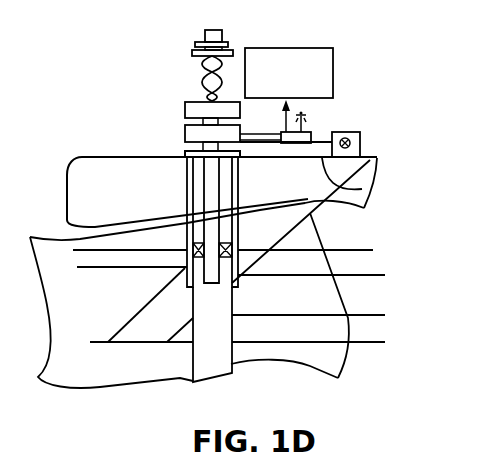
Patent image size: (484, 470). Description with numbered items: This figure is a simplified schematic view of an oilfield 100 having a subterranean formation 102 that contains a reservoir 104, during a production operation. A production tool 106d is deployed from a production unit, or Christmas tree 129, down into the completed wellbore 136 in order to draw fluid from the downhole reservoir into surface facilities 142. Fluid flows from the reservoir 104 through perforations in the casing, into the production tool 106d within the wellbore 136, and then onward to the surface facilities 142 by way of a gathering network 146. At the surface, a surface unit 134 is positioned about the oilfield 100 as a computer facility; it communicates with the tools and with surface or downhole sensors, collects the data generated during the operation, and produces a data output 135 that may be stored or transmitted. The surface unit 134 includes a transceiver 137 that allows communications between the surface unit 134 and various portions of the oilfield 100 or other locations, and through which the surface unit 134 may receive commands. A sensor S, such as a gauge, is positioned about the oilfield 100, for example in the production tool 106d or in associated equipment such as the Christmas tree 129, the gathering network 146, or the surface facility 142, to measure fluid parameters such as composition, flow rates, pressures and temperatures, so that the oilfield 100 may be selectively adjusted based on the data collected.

The oilfield 100 is at (161, 106).
The subterranean formation 102 is at (283, 222).
The reservoir 104 is at (317, 303).
The production tool 106d is at (185, 268).
The Christmas tree 129 is at (223, 35).
The surface unit 134 is at (283, 121).
The data output 135 is at (333, 75).
The wellbore 136 is at (214, 194).
The transceiver 137 is at (306, 120).
The surface facilities 142 is at (362, 143).
The gathering network 146 is at (363, 190).
The sensor S is at (348, 139).